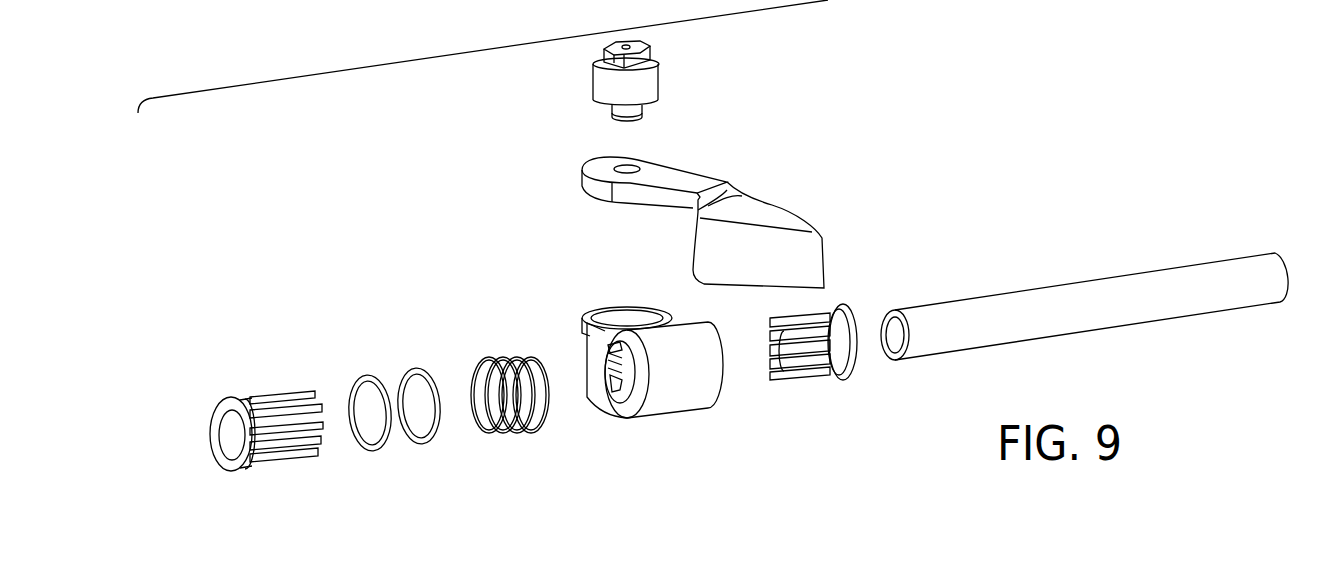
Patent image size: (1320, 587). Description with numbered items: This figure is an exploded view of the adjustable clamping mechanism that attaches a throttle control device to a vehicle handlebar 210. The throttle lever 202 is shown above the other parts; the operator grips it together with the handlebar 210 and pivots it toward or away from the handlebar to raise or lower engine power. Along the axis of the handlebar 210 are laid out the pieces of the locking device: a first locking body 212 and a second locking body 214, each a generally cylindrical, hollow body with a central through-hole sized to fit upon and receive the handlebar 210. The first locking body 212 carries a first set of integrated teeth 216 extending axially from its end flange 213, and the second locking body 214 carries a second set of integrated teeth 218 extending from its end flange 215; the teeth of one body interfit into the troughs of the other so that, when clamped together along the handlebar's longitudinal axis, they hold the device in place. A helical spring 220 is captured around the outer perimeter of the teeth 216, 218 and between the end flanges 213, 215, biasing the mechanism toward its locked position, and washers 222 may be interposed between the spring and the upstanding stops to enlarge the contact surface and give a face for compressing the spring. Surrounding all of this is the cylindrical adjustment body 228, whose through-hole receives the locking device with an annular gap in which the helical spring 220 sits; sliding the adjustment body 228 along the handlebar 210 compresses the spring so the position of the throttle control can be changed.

The throttle lever 202 is at (757, 183).
The handlebar 210 is at (1082, 289).
The first locking body 212 is at (843, 328).
The end flange 213 is at (860, 357).
The first set of integrated teeth 216 is at (813, 380).
The cylindrical adjustment body 228 is at (673, 405).
The helical spring 220 is at (510, 353).
The washer 222 is at (438, 362).
The second locking body 214 is at (234, 394).
The end flange 215 is at (218, 448).
The second set of integrated teeth 218 is at (286, 403).